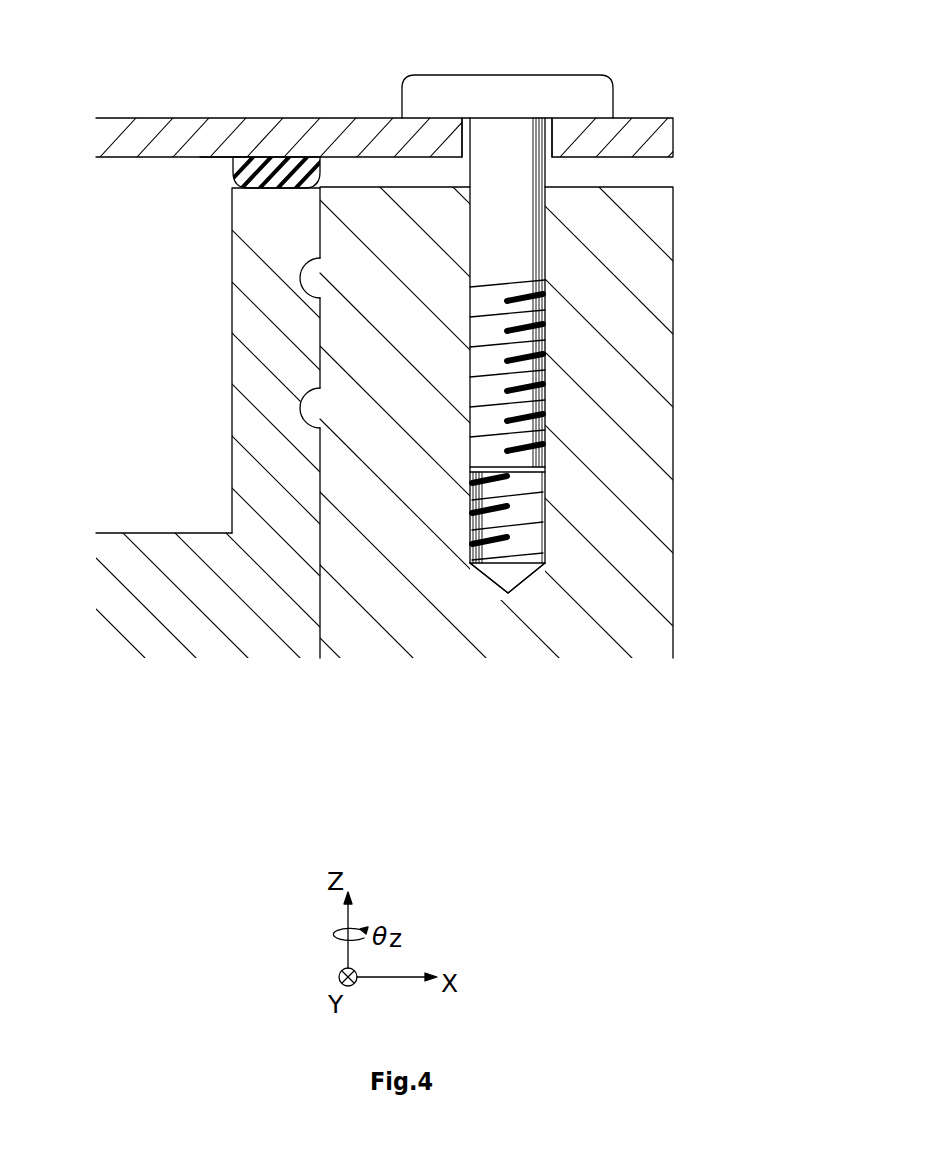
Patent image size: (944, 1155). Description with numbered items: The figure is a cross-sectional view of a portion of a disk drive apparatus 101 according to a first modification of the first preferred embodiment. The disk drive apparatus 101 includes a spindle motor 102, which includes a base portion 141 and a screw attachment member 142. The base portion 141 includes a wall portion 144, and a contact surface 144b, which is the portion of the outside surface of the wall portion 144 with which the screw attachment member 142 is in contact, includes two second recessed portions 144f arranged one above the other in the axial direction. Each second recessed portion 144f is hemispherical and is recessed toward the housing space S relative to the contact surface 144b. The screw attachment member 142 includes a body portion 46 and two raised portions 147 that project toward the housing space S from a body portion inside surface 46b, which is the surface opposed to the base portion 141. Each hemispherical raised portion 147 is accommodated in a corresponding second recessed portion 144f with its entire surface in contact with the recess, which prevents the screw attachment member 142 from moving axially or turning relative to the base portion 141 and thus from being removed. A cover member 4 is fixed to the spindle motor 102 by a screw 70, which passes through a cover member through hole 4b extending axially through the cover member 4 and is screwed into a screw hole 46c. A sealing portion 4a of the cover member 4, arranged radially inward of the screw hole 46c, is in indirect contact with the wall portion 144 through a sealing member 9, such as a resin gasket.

The cover member 4 is at (162, 123).
The sealing portion 4a is at (222, 170).
The cover member through hole 4b is at (465, 140).
The sealing member 9 is at (281, 190).
The screw 70 is at (558, 92).
The raised portion 147 is at (320, 288).
The body portion 46 is at (632, 321).
The body portion inside surface 46b is at (330, 542).
The screw hole 46c is at (545, 552).
The screw attachment member 142 is at (461, 675).
The wall portion 144 is at (238, 324).
The contact surface 144b is at (319, 466).
The second recessed portion 144f is at (308, 280).
The base portion 141 is at (218, 672).
The disk drive apparatus 101 is at (781, 130).
The spindle motor 102 is at (720, 235).
The housing space S is at (60, 290).